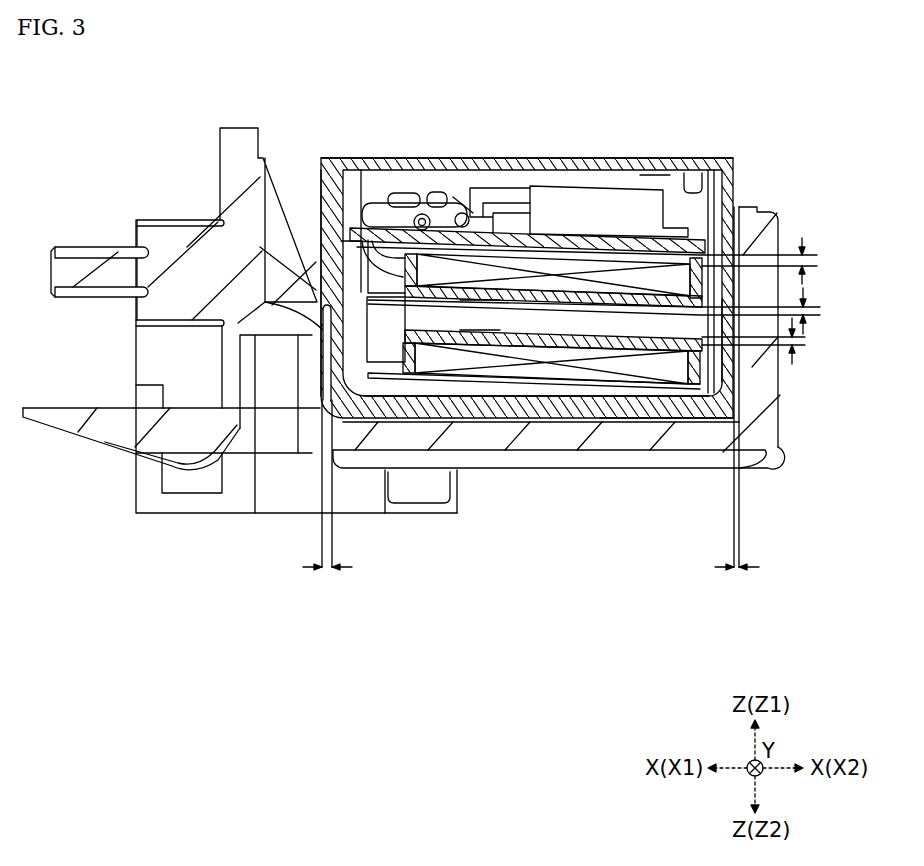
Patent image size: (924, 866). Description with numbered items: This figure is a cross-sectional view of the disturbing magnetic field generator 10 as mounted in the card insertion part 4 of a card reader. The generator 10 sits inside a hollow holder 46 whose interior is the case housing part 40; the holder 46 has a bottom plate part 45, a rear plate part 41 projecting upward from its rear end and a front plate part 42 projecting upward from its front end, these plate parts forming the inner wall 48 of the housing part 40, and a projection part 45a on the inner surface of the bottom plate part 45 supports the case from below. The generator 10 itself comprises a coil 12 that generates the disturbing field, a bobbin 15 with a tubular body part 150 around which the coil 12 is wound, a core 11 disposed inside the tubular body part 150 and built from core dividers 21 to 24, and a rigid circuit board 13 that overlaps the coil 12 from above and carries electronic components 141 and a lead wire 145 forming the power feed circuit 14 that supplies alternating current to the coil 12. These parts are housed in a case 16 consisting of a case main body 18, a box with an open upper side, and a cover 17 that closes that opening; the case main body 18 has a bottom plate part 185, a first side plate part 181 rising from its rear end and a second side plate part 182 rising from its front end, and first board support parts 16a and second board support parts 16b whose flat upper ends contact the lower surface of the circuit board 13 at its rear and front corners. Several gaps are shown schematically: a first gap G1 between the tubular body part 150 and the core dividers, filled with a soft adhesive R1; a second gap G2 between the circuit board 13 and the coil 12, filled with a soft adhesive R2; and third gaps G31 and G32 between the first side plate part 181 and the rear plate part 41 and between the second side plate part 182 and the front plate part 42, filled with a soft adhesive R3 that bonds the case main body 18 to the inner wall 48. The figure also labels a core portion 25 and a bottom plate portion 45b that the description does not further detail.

The disturbing magnetic field generator 10 is at (376, 156).
The core 11 is at (650, 325).
The coil 12 is at (533, 350).
The circuit board 13 is at (648, 242).
The power feed circuit 14 is at (591, 159).
The electronic component 141 is at (600, 200).
The lead wire 145 is at (438, 218).
The bobbin 15 is at (534, 205).
The tubular body part 150 is at (492, 330).
The case 16 is at (218, 43).
The first board support part 16a is at (358, 240).
The second board support part 16b is at (708, 245).
The cover 17 is at (318, 176).
The case main body 18 is at (324, 205).
The first side plate part 181 is at (219, 221).
The second side plate part 182 is at (730, 362).
The bottom plate part 185 is at (507, 412).
The card insertion part 4 is at (442, 347).
The holder 46 is at (213, 236).
The case housing part 40 is at (741, 257).
The rear plate part 41 is at (306, 378).
The front plate part 42 is at (752, 393).
The inner wall 48 is at (323, 333).
The bottom plate part 45 is at (563, 440).
The projection part 45a is at (422, 420).
The base bottom surface 45b is at (620, 420).
The core divider 21 is at (594, 325).
The core divider 24 is at (594, 325).
The terminal 25 is at (384, 343).
The first gap G1 is at (840, 327).
The adhesive R1 is at (840, 327).
The second gap G2 is at (845, 261).
The adhesive R2 is at (845, 261).
The third gap G31 is at (349, 584).
The third gap G32 is at (758, 585).
The adhesive R3 is at (349, 584).